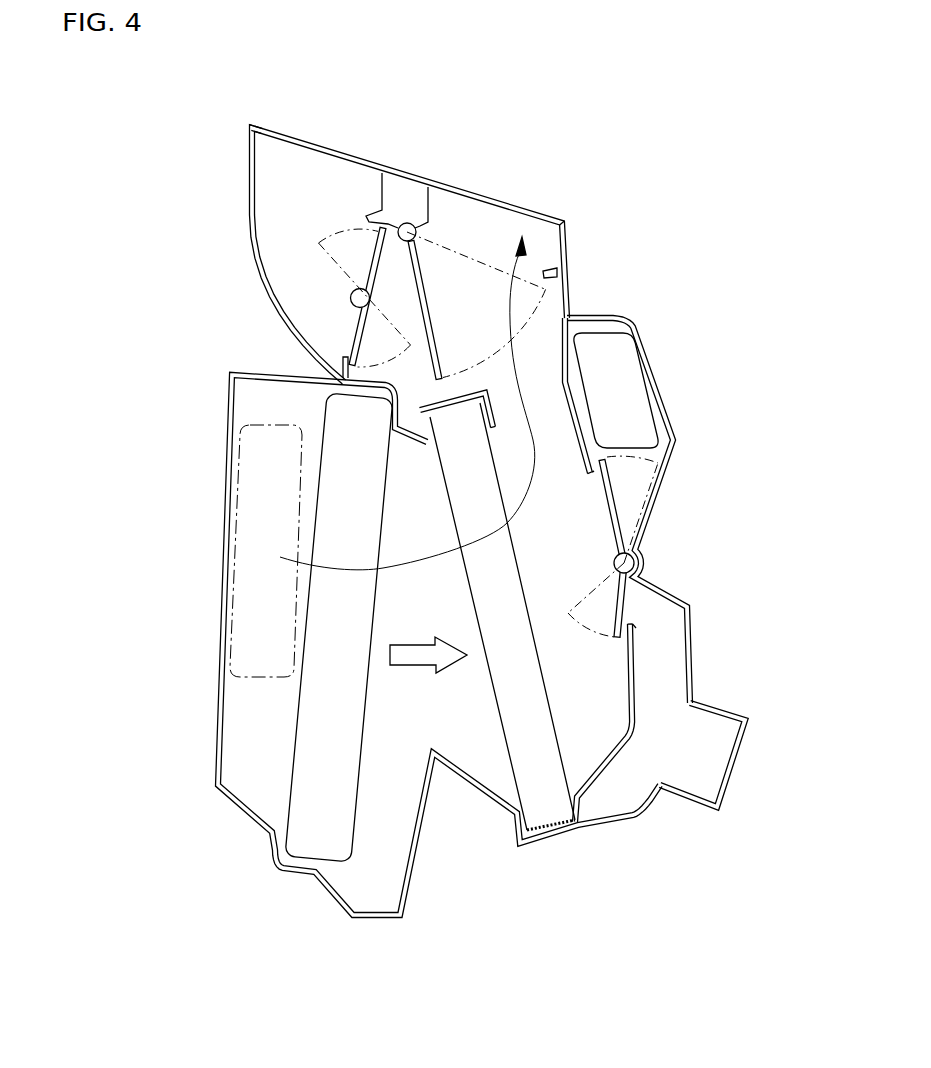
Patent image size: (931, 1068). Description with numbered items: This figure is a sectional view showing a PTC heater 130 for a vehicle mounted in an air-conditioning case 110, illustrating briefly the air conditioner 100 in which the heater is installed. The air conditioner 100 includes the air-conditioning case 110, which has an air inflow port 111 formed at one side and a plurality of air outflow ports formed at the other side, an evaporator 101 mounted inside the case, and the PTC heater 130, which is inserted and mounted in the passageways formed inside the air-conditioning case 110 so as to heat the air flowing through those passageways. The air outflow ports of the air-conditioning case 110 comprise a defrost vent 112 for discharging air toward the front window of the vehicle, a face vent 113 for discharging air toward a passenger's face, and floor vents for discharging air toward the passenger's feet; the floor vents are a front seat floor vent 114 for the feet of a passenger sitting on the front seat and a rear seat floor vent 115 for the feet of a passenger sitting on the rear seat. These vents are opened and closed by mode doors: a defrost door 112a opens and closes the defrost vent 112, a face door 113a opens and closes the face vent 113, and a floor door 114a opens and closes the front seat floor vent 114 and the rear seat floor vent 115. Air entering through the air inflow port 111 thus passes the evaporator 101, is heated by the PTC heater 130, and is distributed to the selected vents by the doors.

The air conditioner 100 is at (183, 298).
The air-conditioning case 110 is at (222, 398).
The evaporator 101 is at (313, 760).
The air inflow port 111 is at (260, 684).
The defrost vent 112 is at (305, 167).
The defrost door 112a is at (363, 253).
The face vent 113 is at (475, 220).
The face door 113a is at (427, 301).
The front seat floor vent 114 is at (628, 385).
The floor door 114a is at (612, 508).
The rear seat floor vent 115 is at (710, 758).
The PTC heater 130 is at (545, 810).